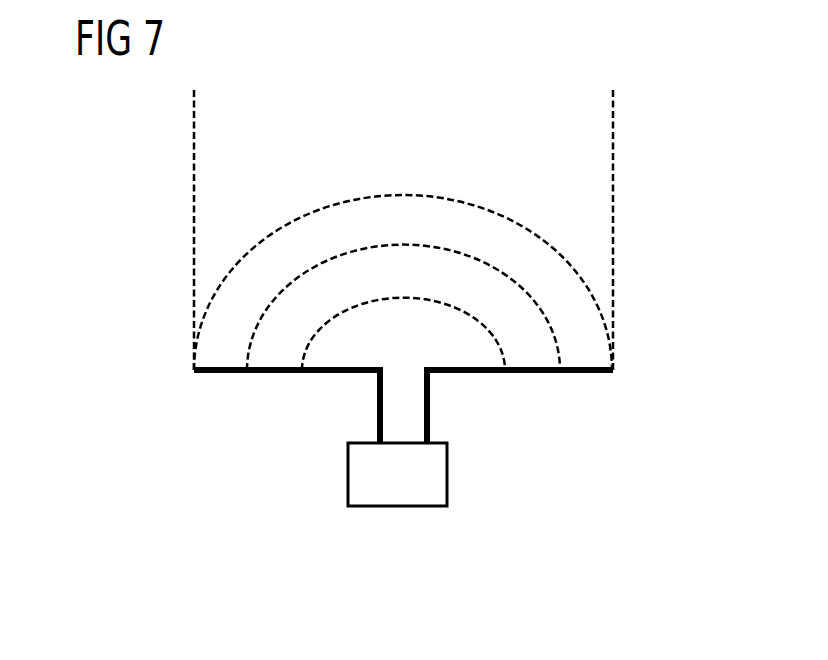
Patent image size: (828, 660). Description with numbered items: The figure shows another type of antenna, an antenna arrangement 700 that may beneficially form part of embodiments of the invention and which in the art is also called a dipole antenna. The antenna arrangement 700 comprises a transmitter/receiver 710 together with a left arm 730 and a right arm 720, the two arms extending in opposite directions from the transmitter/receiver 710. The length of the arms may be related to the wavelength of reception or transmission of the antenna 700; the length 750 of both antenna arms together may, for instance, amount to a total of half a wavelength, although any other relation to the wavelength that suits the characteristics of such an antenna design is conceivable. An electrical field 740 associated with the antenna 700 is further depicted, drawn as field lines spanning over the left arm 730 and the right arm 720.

The antenna arrangement 700 is at (530, 473).
The transmitter/receiver 710 is at (398, 507).
The right arm 720 is at (588, 375).
The left arm 730 is at (221, 375).
The electrical field 740 is at (480, 206).
The length 750 is at (607, 104).